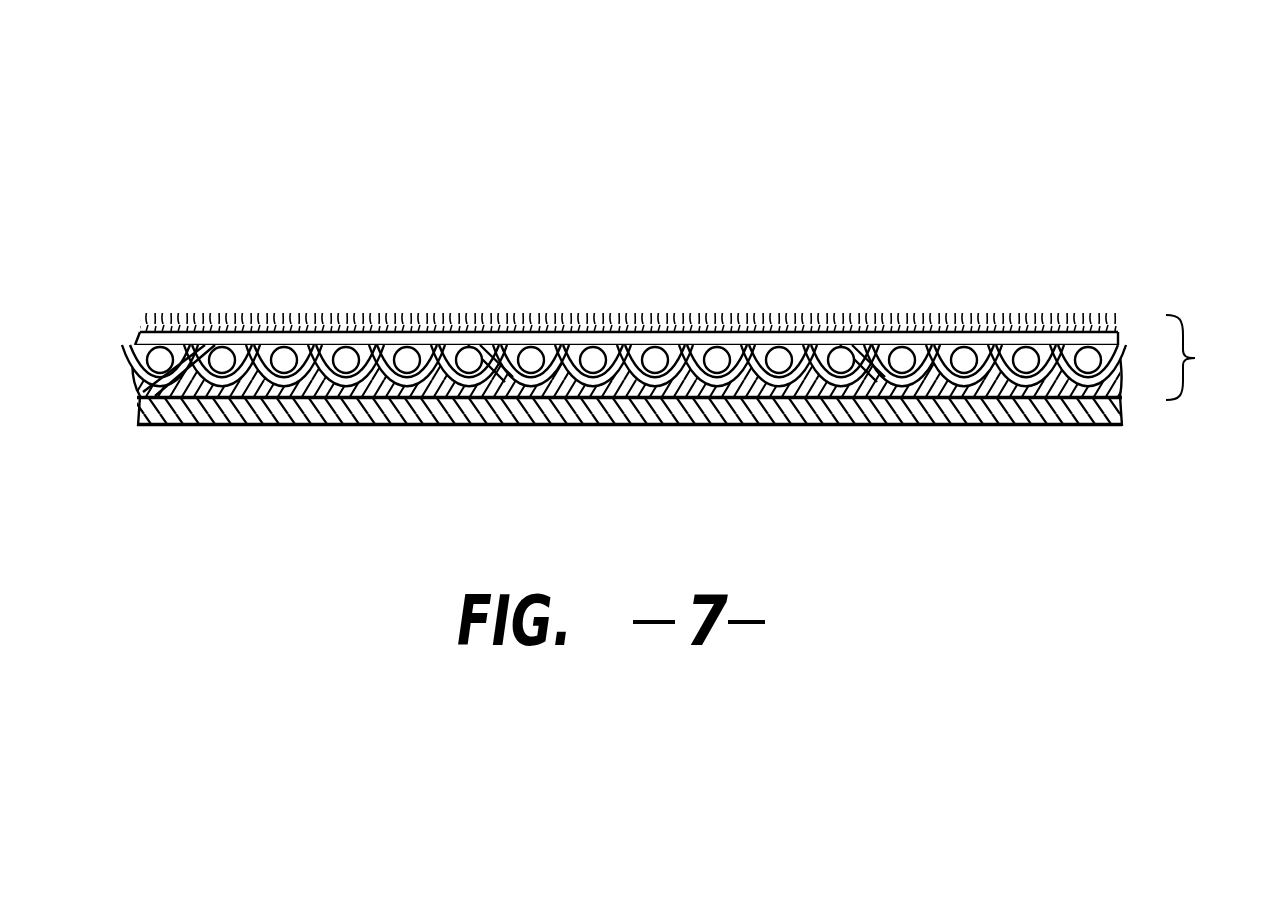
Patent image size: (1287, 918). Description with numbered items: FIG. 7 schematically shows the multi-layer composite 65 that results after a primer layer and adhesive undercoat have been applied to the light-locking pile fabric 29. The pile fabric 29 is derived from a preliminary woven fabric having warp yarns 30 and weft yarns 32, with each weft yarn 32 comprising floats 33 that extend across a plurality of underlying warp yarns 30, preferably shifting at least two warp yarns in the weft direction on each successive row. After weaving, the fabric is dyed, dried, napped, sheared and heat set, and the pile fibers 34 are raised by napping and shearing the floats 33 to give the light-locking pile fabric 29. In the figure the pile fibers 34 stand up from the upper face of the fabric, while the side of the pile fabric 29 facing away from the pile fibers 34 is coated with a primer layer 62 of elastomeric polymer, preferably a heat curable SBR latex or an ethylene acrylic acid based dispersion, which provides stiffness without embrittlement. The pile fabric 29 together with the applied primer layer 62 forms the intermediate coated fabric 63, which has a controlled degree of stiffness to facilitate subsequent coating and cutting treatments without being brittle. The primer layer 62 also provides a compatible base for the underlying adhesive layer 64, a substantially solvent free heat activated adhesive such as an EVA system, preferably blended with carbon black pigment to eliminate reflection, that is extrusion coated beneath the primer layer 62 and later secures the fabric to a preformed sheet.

The light-locking pile fabric 29 is at (400, 316).
The warp yarns 30 is at (220, 362).
The weft yarns 32 is at (1112, 343).
The floats 33 is at (350, 340).
The pile fibers 34 is at (587, 331).
The primer layer 62 is at (822, 401).
The intermediate coated fabric 63 is at (1204, 357).
The adhesive layer 64 is at (648, 424).
The multi-layer composite 65 is at (842, 150).